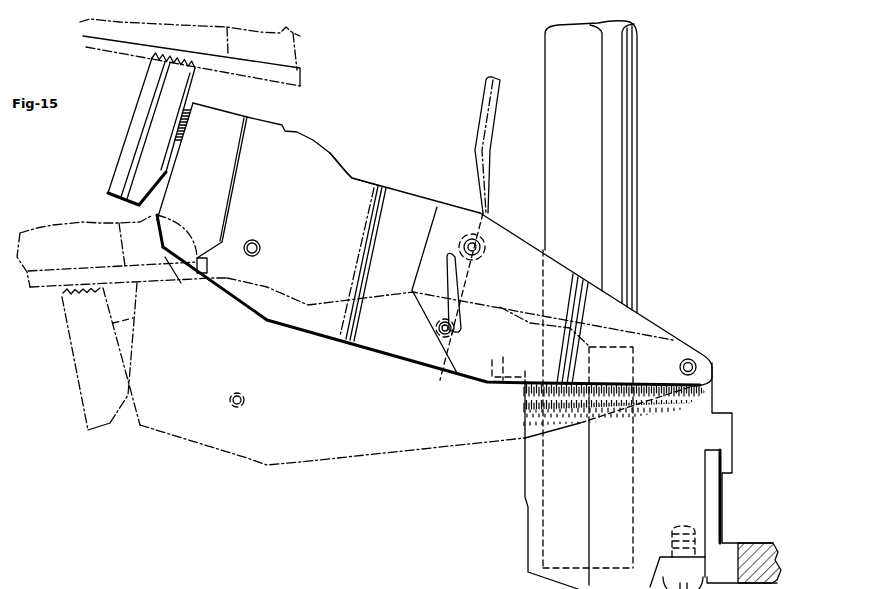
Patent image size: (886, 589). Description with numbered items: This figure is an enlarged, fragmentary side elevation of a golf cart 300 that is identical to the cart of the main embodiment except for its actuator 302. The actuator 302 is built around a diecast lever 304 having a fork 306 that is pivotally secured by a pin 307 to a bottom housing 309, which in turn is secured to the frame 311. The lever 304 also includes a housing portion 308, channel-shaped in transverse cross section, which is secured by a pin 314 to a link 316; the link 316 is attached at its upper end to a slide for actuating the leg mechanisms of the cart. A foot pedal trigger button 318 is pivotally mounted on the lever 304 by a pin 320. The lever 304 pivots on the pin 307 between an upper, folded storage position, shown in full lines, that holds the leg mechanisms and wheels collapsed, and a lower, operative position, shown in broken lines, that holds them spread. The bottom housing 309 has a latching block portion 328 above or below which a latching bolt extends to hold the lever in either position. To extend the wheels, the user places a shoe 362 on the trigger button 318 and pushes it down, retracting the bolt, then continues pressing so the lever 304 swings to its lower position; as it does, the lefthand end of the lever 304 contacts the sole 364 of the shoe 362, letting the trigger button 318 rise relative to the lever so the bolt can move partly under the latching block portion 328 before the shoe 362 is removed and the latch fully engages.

The golf cart 300 is at (611, 167).
The actuator 302 is at (427, 150).
The diecast lever 304 is at (351, 175).
The fork 306 is at (535, 243).
The pin 307 is at (697, 365).
The housing portion 308 is at (302, 143).
The bottom housing 309 is at (702, 413).
The frame 311 is at (628, 142).
The pin 314 is at (482, 242).
The link 316 is at (487, 173).
The foot pedal trigger button 318 is at (195, 83).
The pin 320 is at (258, 243).
The latching block portion 328 is at (502, 381).
The shoe 362 is at (297, 30).
The sole 364 is at (300, 82).